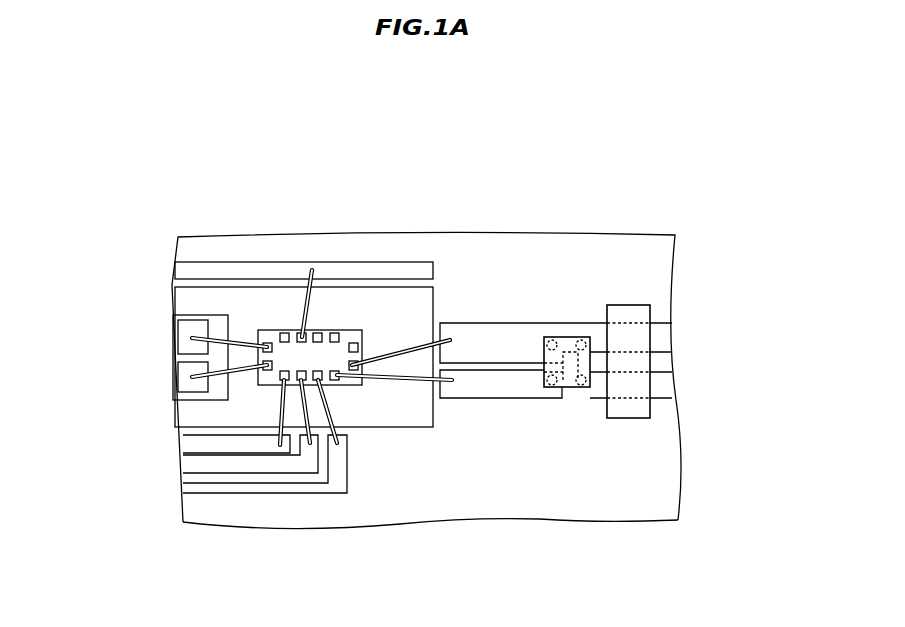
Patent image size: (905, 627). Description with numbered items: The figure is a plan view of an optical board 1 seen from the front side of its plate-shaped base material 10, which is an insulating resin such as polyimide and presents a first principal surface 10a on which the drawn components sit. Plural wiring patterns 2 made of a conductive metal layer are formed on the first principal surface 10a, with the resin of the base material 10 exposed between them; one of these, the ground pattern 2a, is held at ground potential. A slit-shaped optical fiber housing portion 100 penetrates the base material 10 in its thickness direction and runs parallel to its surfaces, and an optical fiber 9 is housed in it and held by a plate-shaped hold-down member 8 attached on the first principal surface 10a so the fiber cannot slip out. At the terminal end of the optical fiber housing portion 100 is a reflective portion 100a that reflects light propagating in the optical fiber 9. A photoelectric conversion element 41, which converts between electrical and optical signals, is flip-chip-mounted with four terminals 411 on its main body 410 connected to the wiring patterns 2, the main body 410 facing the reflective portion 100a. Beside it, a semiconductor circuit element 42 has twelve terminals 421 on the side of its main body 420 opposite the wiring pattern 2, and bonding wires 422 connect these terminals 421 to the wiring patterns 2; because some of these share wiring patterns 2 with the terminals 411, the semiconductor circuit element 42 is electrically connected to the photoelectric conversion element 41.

The optical board 1 is at (195, 107).
The base material 10 is at (672, 458).
The first principal surface 10a is at (257, 517).
The wiring pattern 2 is at (705, 437).
The ground pattern 2a is at (482, 335).
The semiconductor circuit element 42 is at (255, 320).
The main body 420 is at (351, 329).
The terminal 421 is at (300, 334).
The bonding wire 422 is at (403, 377).
The photoelectric conversion element 41 is at (563, 330).
The main body 410 is at (570, 337).
The terminal 411 is at (582, 343).
The reflective portion 100a is at (570, 368).
The hold-down member 8 is at (650, 310).
The optical fiber housing portion 100 is at (660, 352).
The optical fiber 9 is at (665, 358).